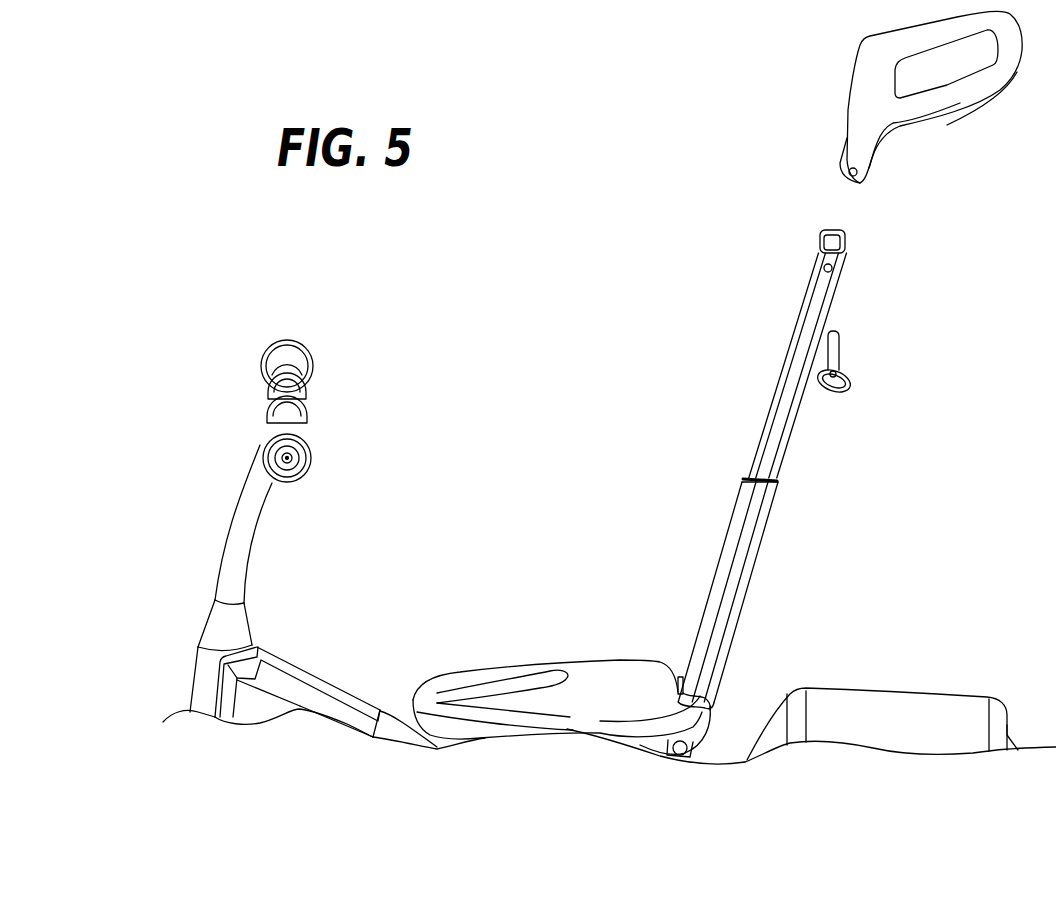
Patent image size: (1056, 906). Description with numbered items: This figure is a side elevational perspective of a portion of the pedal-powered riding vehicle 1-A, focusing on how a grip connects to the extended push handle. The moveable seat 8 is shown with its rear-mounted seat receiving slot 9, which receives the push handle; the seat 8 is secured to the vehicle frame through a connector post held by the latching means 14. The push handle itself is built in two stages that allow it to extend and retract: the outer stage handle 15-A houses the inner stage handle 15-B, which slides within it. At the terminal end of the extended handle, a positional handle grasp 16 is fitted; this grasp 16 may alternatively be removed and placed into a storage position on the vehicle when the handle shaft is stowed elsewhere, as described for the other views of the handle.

The riding vehicle 1-A is at (332, 405).
The moveable seat 8 is at (592, 695).
The seat receiving slot 9 is at (677, 683).
The latching means 14 is at (840, 353).
The outer stage handle 15-A is at (743, 510).
The inner stage handle 15-B is at (810, 308).
The positional handle grasp 16 is at (840, 118).